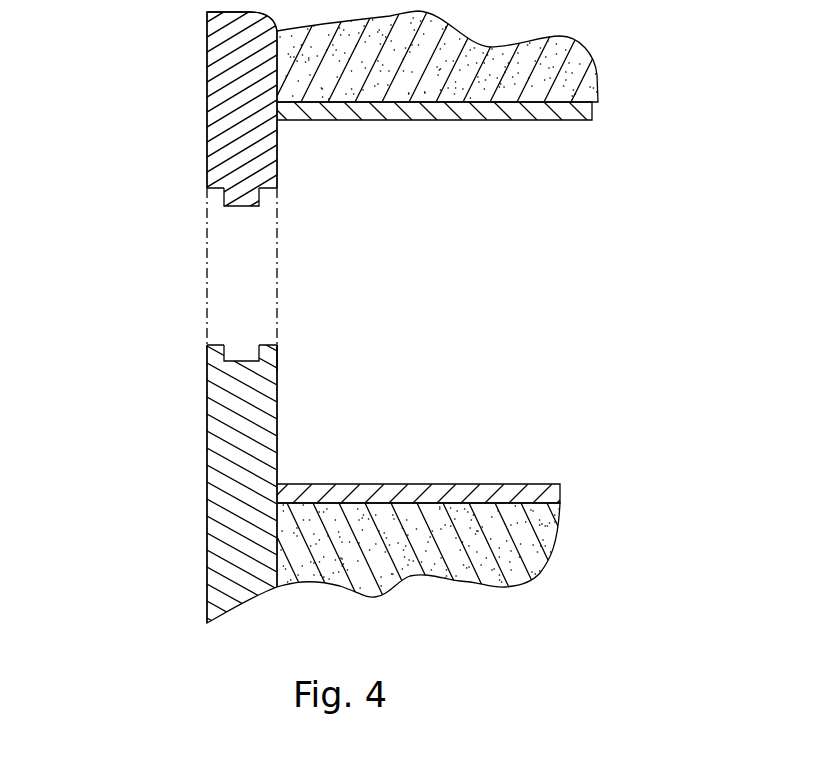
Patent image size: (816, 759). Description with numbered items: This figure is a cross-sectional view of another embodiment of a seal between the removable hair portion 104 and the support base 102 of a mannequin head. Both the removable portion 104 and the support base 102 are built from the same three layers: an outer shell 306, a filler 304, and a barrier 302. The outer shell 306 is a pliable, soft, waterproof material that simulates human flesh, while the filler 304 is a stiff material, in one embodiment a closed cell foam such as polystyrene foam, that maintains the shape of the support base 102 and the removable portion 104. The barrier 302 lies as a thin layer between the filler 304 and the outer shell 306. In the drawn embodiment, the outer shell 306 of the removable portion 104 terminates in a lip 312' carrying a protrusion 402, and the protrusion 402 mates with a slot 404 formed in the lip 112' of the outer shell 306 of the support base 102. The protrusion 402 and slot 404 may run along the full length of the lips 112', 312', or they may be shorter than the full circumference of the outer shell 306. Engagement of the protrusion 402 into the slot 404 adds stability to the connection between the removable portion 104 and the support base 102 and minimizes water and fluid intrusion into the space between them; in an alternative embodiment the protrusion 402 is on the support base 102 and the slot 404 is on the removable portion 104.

The removable hair portion 104 is at (137, 128).
The support base 102 is at (137, 408).
The outer shell 306 is at (207, 68).
The filler 304 is at (597, 84).
The barrier 302 is at (497, 121).
The protrusion 402 is at (236, 206).
The slot 404 is at (238, 361).
The lip 312' is at (186, 258).
The lip 112' is at (329, 379).